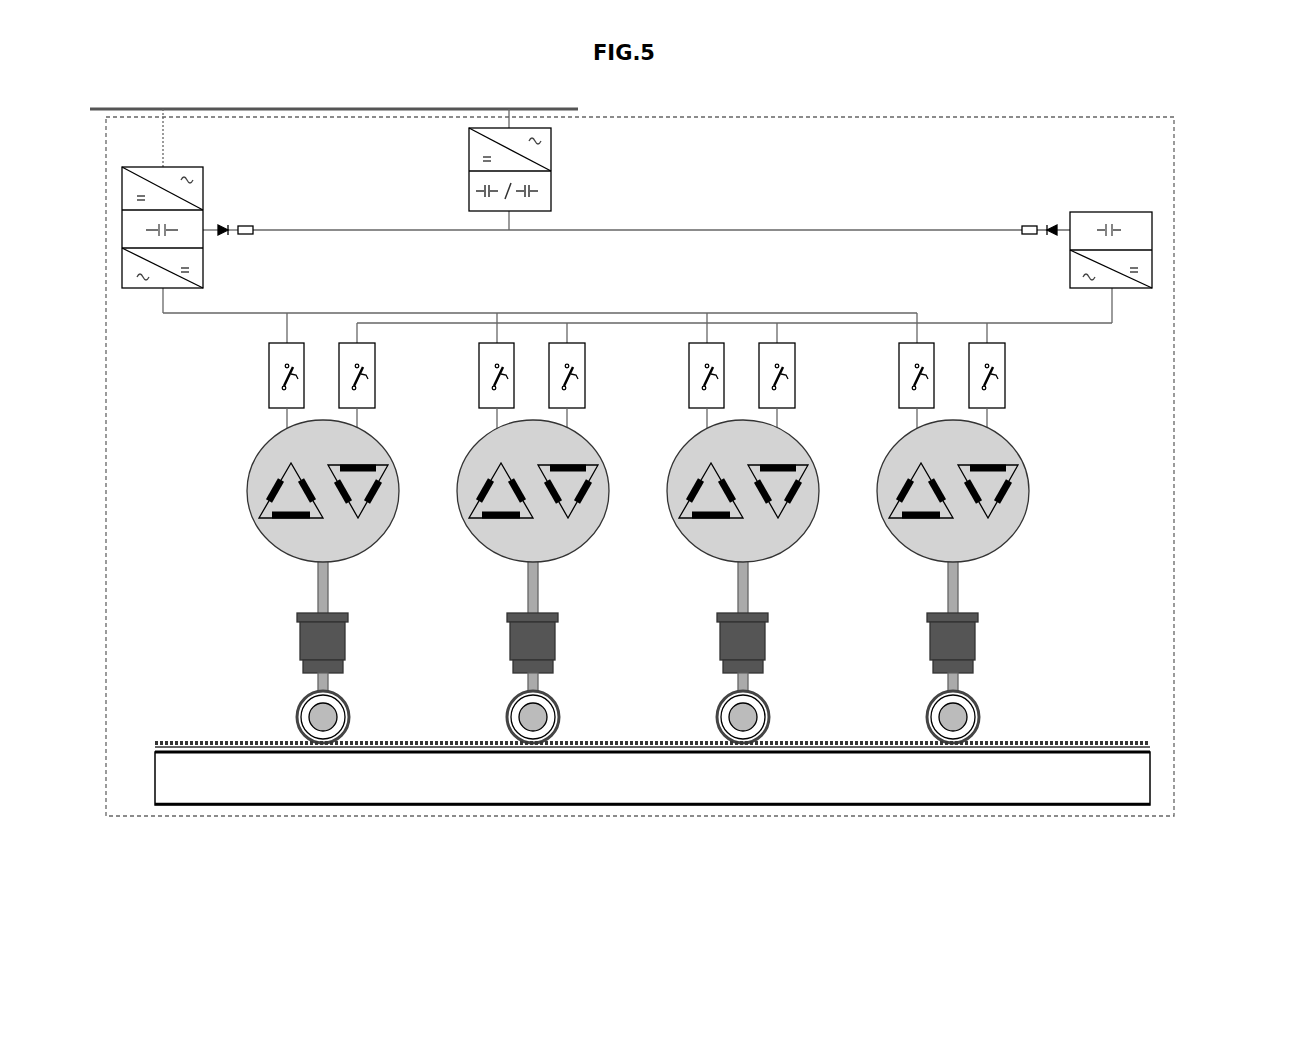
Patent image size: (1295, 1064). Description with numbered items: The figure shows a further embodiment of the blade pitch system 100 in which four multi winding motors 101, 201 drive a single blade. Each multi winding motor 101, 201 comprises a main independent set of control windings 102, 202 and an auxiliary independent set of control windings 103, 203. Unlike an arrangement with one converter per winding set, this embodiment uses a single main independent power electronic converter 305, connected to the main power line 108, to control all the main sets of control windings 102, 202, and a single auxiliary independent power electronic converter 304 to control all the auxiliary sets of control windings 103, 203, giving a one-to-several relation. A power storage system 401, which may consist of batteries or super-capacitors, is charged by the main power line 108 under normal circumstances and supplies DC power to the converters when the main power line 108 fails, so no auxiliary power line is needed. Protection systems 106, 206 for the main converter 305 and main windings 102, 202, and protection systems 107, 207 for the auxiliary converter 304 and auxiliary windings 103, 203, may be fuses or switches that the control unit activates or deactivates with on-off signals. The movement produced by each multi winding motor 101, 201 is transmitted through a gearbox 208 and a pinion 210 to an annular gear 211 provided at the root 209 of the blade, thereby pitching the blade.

The blade pitch system 100 is at (1050, 112).
The main power line 108 is at (172, 105).
The main independent power electronic converter 305 is at (206, 185).
The power storage system 401 is at (556, 185).
The auxiliary independent power electronic converter 304 is at (1156, 228).
The protection system 106 is at (268, 365).
The protection system 107 is at (377, 397).
The multi winding motor 101 is at (272, 538).
The main independent set of control windings 102 is at (290, 540).
The auxiliary independent set of control windings 103 is at (355, 522).
The protection system 206 is at (670, 360).
The protection system 207 is at (817, 365).
The multi winding motor 201 is at (711, 511).
The main independent set of control windings 202 is at (694, 532).
The auxiliary independent set of control windings 203 is at (749, 533).
The gearbox 208 is at (296, 642).
The pinion 210 is at (352, 715).
The annular gear 211 is at (1154, 742).
The root 209 is at (1154, 776).